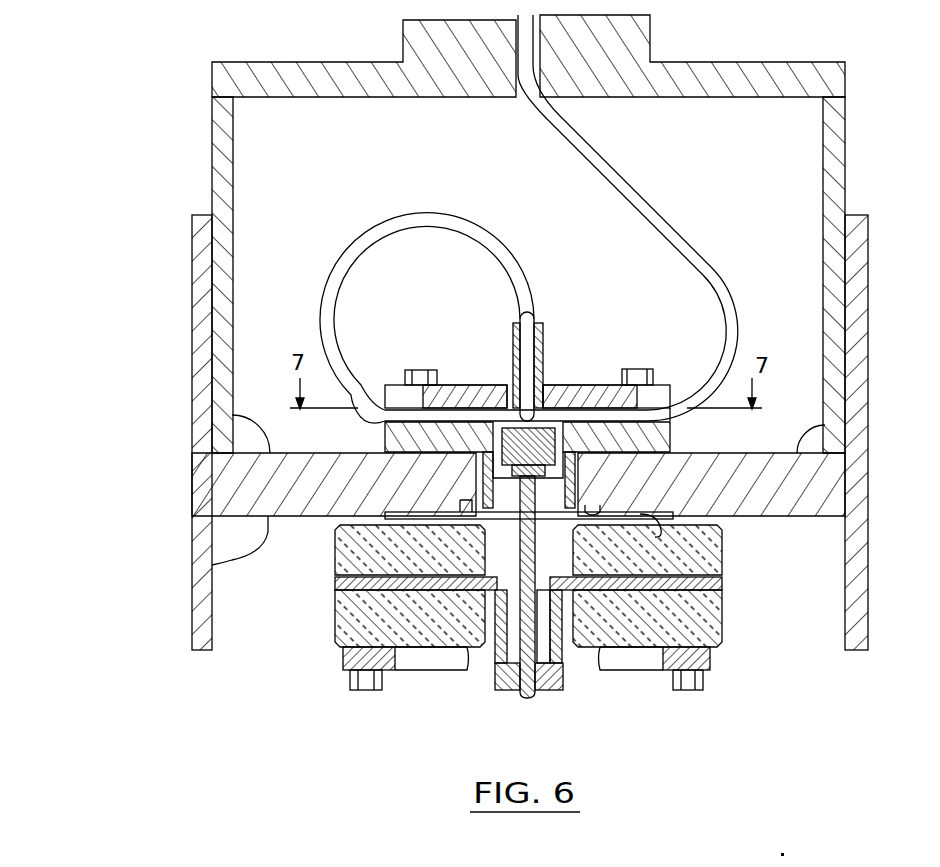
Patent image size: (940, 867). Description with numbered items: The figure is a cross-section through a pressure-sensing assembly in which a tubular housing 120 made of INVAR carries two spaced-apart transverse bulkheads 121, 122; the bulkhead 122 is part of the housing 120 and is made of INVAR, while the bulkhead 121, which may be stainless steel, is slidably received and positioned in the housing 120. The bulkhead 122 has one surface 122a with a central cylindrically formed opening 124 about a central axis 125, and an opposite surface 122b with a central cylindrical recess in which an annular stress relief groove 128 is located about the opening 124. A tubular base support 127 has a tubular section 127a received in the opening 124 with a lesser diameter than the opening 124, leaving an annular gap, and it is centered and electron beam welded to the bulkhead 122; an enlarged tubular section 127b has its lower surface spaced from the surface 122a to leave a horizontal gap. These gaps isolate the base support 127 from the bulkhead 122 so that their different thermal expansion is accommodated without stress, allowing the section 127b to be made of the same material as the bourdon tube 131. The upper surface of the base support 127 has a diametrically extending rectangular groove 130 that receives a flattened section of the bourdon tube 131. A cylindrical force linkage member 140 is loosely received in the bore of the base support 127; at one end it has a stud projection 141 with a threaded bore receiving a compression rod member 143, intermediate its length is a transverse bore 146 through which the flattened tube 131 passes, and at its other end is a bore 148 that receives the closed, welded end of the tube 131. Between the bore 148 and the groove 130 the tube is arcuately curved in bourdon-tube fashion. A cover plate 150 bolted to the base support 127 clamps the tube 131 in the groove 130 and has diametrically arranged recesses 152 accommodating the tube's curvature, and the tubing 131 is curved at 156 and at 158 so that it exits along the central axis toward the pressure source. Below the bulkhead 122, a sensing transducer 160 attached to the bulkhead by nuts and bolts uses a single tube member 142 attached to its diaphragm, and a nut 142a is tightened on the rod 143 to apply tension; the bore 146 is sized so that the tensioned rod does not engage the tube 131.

The tubular housing 120 is at (870, 381).
The bulkhead 121 is at (315, 97).
The bulkhead 122 is at (840, 412).
The surface 122a is at (232, 415).
The opposite surface 122b is at (212, 565).
The central cylindrically formed opening 124 is at (590, 542).
The central axis 125 is at (660, 537).
The tubular base support 127 is at (477, 466).
The tubular section 127a is at (383, 515).
The enlarged tubular section 127b is at (683, 415).
The annular stress relief groove 128 is at (642, 473).
The groove 130 is at (356, 406).
The bourdon tube 131 is at (655, 203).
The force linkage member 140 is at (503, 467).
The stud projection 141 is at (528, 478).
The tube member 142 is at (495, 652).
The nut 142a is at (505, 692).
The compression rod member 143 is at (560, 652).
The transverse bore 146 is at (522, 424).
The bore 148 is at (526, 312).
The cover plate 150 is at (467, 385).
The recesses 152 is at (640, 406).
The curve of tubing 156 is at (730, 288).
The curve of tubing 158 is at (527, 103).
The sensing transducer 160 is at (720, 620).